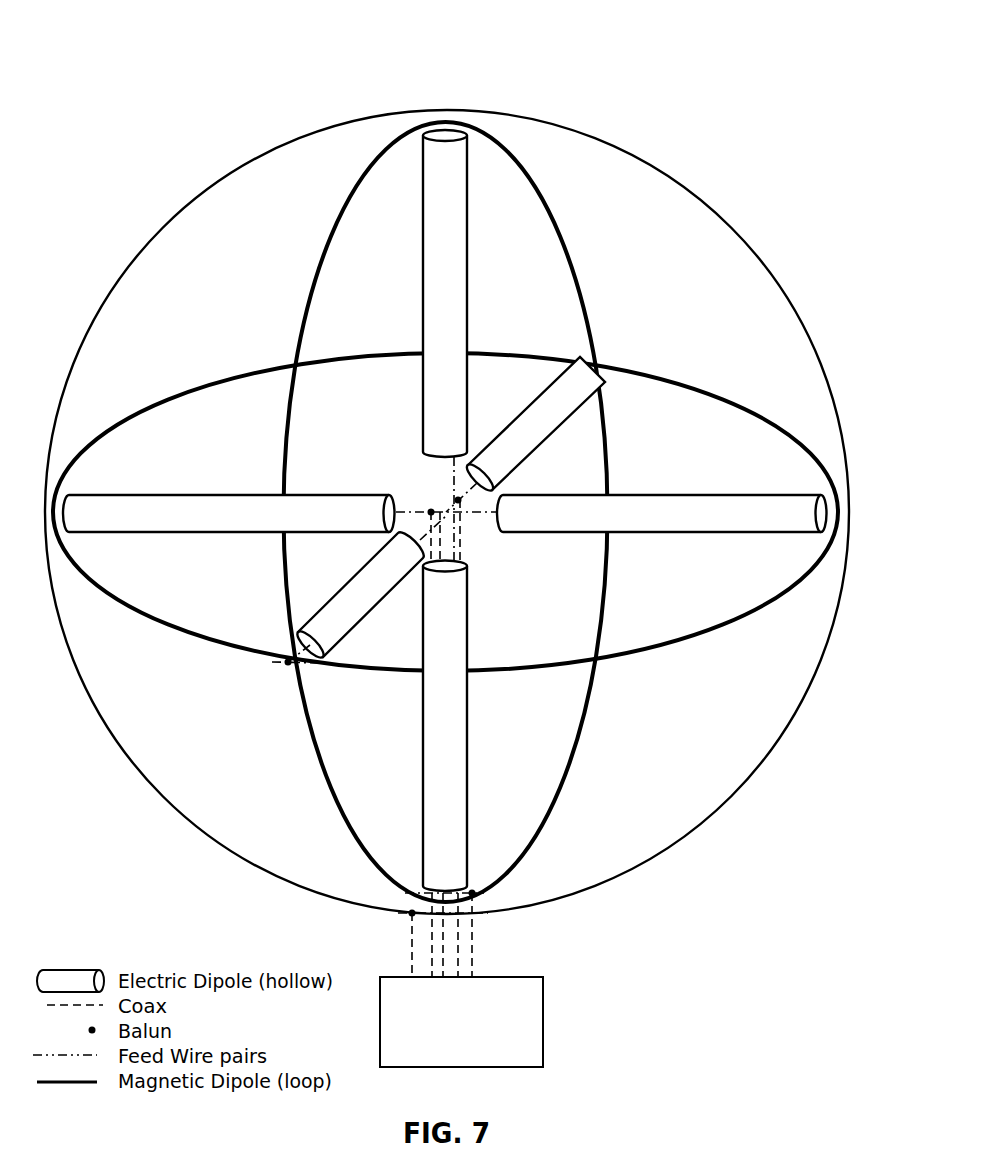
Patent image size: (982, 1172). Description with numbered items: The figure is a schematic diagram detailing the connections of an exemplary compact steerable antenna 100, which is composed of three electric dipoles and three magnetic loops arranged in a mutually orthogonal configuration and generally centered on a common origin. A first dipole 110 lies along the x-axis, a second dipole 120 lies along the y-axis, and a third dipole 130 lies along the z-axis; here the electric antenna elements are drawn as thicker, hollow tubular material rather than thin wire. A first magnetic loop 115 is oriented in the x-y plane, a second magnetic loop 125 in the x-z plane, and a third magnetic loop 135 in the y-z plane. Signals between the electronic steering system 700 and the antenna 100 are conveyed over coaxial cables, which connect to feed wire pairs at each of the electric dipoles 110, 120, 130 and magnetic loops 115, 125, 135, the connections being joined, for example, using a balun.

The compact steerable antenna 100 is at (568, 63).
The first dipole 110 is at (335, 593).
The first magnetic loop 115 is at (133, 417).
The second dipole 120 is at (695, 495).
The second magnetic loop 125 is at (312, 287).
The third dipole 130 is at (467, 288).
The third magnetic loop 135 is at (178, 213).
The electronic steering system 700 is at (443, 1056).